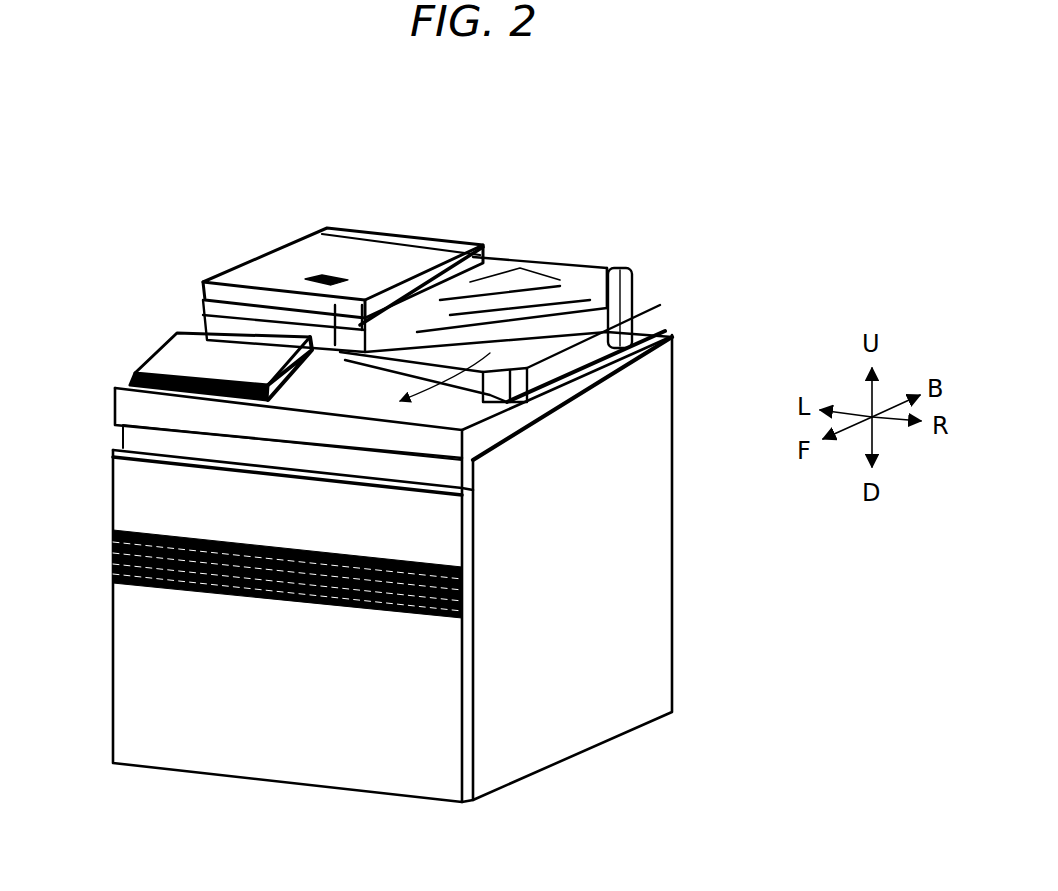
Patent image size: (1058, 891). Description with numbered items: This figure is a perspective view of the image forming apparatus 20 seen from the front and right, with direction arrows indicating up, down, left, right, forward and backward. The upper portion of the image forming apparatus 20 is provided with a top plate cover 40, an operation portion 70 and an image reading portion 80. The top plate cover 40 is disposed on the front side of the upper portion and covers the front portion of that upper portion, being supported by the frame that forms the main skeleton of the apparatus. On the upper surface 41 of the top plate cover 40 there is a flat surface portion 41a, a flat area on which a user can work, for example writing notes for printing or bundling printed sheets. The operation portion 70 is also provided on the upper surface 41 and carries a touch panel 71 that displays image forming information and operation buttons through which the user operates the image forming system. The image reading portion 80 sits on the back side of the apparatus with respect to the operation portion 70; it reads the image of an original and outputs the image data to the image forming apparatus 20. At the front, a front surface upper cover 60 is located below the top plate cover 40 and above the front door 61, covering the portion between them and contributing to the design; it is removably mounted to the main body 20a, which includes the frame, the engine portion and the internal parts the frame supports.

The image forming apparatus 20 is at (432, 194).
The main body 20a is at (608, 607).
The top plate cover 40 is at (106, 401).
The upper surface 41 is at (565, 357).
The flat surface portion 41a is at (457, 412).
The front surface upper cover 60 is at (457, 470).
The front door 61 is at (440, 530).
The operation portion 70 is at (165, 334).
The touch panel 71 is at (190, 352).
The image reading portion 80 is at (272, 262).